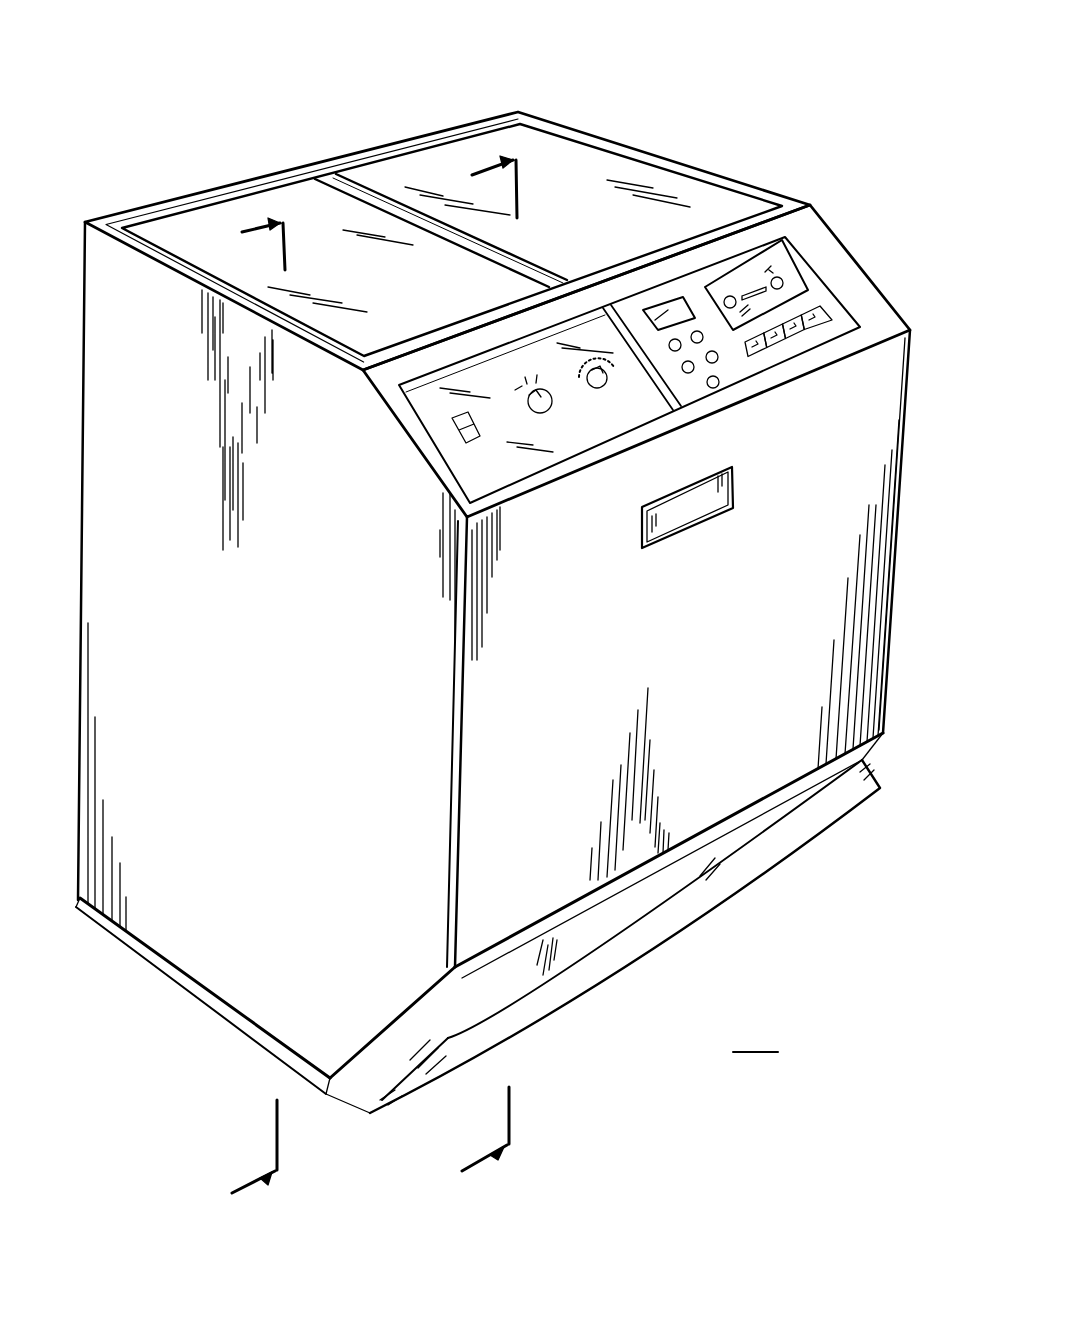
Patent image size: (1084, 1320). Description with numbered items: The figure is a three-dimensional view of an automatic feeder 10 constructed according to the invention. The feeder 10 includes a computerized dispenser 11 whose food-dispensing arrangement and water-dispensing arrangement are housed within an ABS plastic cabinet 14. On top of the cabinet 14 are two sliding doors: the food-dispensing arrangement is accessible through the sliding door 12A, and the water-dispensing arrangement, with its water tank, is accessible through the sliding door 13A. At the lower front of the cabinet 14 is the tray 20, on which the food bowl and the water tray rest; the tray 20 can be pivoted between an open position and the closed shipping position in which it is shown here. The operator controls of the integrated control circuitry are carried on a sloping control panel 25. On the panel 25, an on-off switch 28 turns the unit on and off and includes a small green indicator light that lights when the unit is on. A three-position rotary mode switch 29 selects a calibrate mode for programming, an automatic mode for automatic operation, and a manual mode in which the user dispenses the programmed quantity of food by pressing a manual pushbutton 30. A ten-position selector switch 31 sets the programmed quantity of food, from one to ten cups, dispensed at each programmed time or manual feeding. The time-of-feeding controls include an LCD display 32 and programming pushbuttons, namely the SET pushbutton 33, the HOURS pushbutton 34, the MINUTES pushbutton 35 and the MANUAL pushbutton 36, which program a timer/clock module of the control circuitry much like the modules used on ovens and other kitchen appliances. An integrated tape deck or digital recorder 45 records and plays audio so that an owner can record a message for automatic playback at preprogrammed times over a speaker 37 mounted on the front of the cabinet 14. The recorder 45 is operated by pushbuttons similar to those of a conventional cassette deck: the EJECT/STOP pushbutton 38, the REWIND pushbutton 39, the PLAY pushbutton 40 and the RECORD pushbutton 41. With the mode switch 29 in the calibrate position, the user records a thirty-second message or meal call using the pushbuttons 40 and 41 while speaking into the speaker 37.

The automatic feeder 10 is at (226, 94).
The computerized dispenser 11 is at (634, 147).
The sliding door 12A is at (203, 217).
The sliding door 13A is at (388, 172).
The cabinet 14 is at (887, 688).
The tray 20 is at (867, 798).
The control panel 25 is at (862, 300).
The on-off switch 28 is at (452, 425).
The rotary mode switch 29 is at (533, 412).
The manual pushbutton 30 is at (715, 363).
The selector switch 31 is at (587, 392).
The LCD display 32 is at (672, 303).
The SET pushbutton 33 is at (670, 352).
The HOURS pushbutton 34 is at (762, 240).
The MINUTES pushbutton 35 is at (686, 373).
The MANUAL pushbutton 36 is at (718, 389).
The speaker 37 is at (645, 548).
The EJECT/STOP pushbutton 38 is at (757, 360).
The REWIND pushbutton 39 is at (772, 352).
The PLAY pushbutton 40 is at (795, 348).
The RECORD pushbutton 41 is at (832, 343).
The tape deck or digital recorder 45 is at (808, 285).